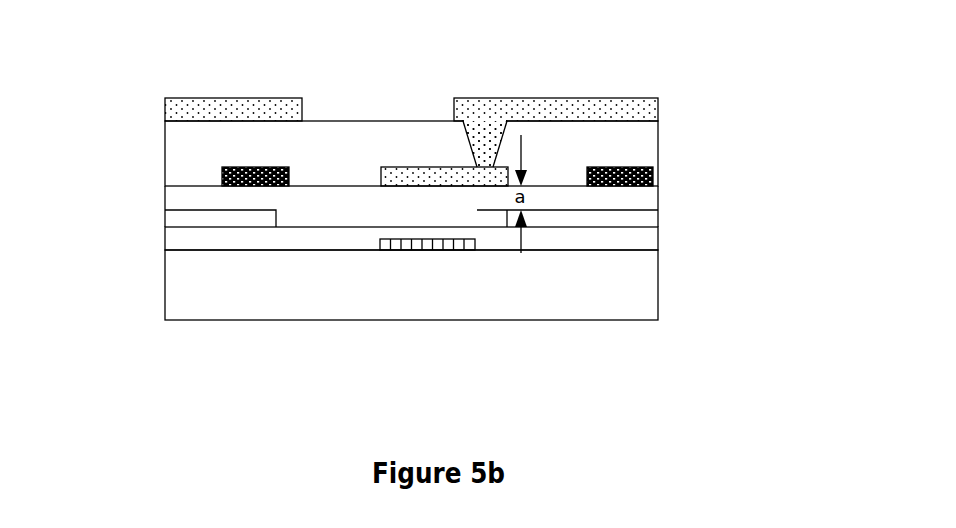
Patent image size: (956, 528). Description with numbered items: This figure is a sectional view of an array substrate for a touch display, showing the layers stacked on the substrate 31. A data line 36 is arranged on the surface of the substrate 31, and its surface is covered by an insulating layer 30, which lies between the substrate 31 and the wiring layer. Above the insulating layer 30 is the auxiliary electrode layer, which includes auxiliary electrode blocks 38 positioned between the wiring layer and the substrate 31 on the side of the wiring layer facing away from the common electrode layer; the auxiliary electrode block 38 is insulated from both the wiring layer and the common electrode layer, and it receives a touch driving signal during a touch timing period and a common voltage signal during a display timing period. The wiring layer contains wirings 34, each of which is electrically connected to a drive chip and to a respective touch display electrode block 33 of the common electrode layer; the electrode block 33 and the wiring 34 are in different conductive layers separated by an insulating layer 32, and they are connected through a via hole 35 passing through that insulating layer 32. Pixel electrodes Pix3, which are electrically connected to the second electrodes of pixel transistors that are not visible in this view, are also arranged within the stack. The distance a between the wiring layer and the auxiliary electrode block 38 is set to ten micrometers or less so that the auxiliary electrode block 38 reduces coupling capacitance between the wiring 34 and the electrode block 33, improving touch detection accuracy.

The insulating layer 30 is at (552, 240).
The substrate 31 is at (398, 302).
The insulating layer 32 is at (192, 133).
The touch display electrode block 33 is at (209, 113).
The wiring 34 is at (415, 178).
The via hole 35 is at (490, 152).
The data line 36 is at (437, 243).
The auxiliary electrode block 38 is at (587, 219).
The pixel electrode Pix3 is at (272, 170).